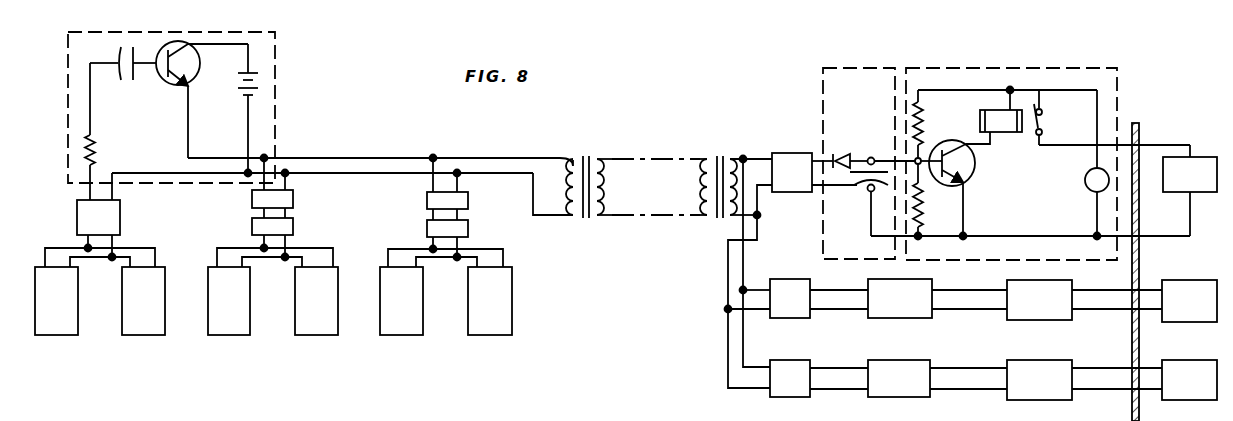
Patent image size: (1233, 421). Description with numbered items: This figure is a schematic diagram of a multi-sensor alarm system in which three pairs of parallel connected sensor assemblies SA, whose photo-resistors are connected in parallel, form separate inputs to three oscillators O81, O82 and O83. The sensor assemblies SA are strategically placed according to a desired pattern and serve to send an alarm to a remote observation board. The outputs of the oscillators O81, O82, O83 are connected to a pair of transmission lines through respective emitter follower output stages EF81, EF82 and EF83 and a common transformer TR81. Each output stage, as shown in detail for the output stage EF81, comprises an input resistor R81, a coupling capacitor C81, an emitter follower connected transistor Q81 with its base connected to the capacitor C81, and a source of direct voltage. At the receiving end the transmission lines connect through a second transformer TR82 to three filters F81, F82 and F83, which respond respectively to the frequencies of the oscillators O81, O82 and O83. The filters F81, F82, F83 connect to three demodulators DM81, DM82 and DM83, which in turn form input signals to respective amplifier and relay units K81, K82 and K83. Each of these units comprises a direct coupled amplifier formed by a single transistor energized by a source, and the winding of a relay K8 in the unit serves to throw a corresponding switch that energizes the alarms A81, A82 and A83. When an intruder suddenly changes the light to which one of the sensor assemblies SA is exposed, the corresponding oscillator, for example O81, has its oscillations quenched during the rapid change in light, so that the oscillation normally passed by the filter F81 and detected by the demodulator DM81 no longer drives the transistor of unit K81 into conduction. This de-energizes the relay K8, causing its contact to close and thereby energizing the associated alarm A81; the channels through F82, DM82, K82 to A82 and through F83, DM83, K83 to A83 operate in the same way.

The emitter follower output stage EF81 is at (278, 66).
The coupling capacitor C81 is at (126, 82).
The emitter follower connected transistor Q81 is at (177, 87).
The input resistor R81 is at (96, 152).
The oscillator O81 is at (122, 220).
The emitter follower output stage EF82 is at (294, 200).
The oscillator O82 is at (294, 228).
The emitter follower output stage EF83 is at (469, 200).
The oscillator O83 is at (469, 232).
The sensor assembly SA is at (47, 337).
The common transformer TR81 is at (600, 128).
The transformer TR82 is at (717, 147).
The filter F81 is at (777, 194).
The demodulator DM81 is at (870, 63).
The relay unit K81 is at (1120, 71).
The relay K8 is at (1006, 133).
The alarm A81 is at (1190, 190).
The filter F82 is at (775, 320).
The demodulator DM82 is at (873, 320).
The relay unit K82 is at (1012, 322).
The alarm A82 is at (1189, 301).
The filter F83 is at (775, 399).
The demodulator DM83 is at (873, 399).
The relay unit K83 is at (1012, 402).
The alarm A83 is at (1166, 402).